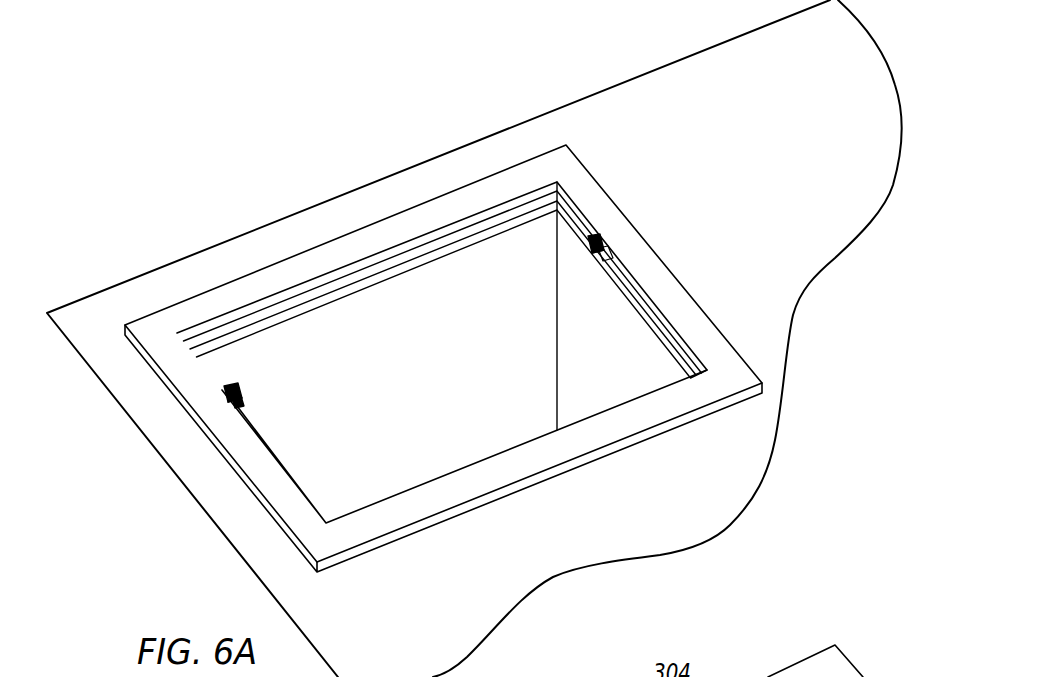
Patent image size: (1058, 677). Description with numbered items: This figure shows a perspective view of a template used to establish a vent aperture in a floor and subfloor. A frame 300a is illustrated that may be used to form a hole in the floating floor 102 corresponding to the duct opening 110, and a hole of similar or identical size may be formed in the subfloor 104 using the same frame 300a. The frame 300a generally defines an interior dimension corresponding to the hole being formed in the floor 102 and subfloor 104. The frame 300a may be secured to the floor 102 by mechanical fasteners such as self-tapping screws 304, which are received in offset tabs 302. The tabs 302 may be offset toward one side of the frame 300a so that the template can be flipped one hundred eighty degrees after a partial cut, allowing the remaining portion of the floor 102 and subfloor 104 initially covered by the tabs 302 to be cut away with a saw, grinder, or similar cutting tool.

The floating floor 102 is at (523, 207).
The subfloor 104 is at (588, 240).
The duct opening 110 is at (303, 347).
The frame 300a is at (432, 217).
The offset tabs 302 is at (237, 405).
The self-tapping screws 304 is at (232, 384).